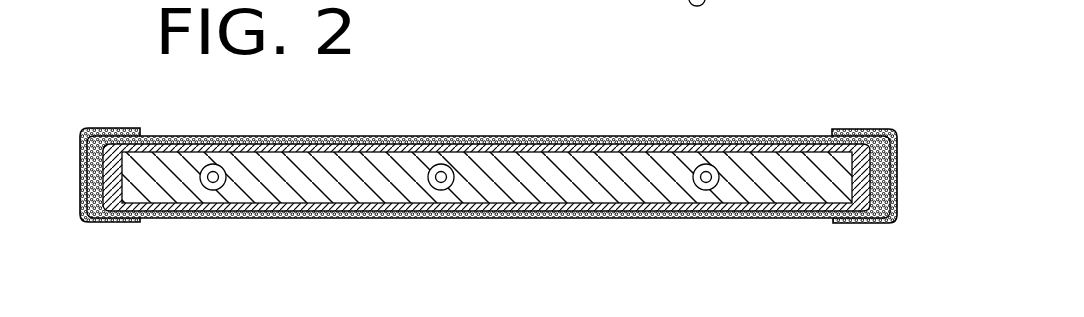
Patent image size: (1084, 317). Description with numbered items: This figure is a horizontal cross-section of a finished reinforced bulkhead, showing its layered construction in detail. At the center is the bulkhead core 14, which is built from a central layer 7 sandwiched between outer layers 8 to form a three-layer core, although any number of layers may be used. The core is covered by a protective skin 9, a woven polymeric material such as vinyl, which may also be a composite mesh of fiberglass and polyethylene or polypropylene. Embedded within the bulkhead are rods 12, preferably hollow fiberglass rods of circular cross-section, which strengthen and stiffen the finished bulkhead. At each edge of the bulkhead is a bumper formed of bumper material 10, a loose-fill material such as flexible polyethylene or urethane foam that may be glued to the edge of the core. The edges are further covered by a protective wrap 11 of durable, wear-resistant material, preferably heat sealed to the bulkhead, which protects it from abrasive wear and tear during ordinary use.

The central layer 7 is at (665, 168).
The outer layers 8 is at (650, 150).
The protective skin 9 is at (500, 158).
The bumper material 10 is at (100, 218).
The protective wrap 11 is at (90, 135).
The rods 12 is at (214, 164).
The bulkhead core 14 is at (486, 119).